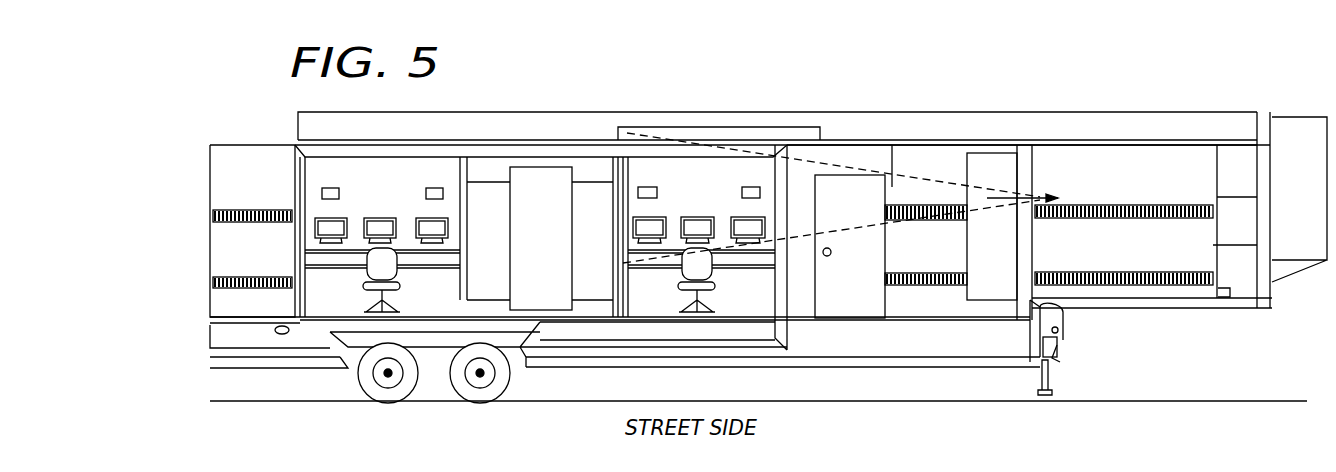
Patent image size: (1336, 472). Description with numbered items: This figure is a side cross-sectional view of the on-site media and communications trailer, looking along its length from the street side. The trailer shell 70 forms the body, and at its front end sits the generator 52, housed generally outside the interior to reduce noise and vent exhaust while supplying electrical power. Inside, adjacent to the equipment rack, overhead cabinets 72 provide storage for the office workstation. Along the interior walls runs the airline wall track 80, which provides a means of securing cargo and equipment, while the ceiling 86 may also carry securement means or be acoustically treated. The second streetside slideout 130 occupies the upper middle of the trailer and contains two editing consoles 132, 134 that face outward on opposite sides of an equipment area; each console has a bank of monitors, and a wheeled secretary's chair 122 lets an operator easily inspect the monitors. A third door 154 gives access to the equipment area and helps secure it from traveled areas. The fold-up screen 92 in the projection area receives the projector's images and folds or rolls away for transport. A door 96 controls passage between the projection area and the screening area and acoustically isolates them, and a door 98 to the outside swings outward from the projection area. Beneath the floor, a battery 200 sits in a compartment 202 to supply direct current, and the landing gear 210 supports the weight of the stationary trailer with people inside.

The second streetside slideout 130 is at (548, 137).
The trailer shell 70 is at (1203, 108).
The ceiling 86 is at (1050, 148).
The airline wall track 80 is at (238, 207).
The editing console 134 is at (405, 196).
The third door 154 is at (565, 230).
The fold-up screen 92 is at (629, 179).
The editing console 132 is at (729, 193).
The secretary's chair 122 is at (398, 290).
The door 98 is at (866, 285).
The door 96 is at (1012, 270).
The overhead cabinets 72 is at (1254, 286).
The generator 52 is at (1318, 171).
The battery 200 is at (1062, 342).
The compartment 202 is at (1060, 362).
The landing gear 210 is at (436, 375).